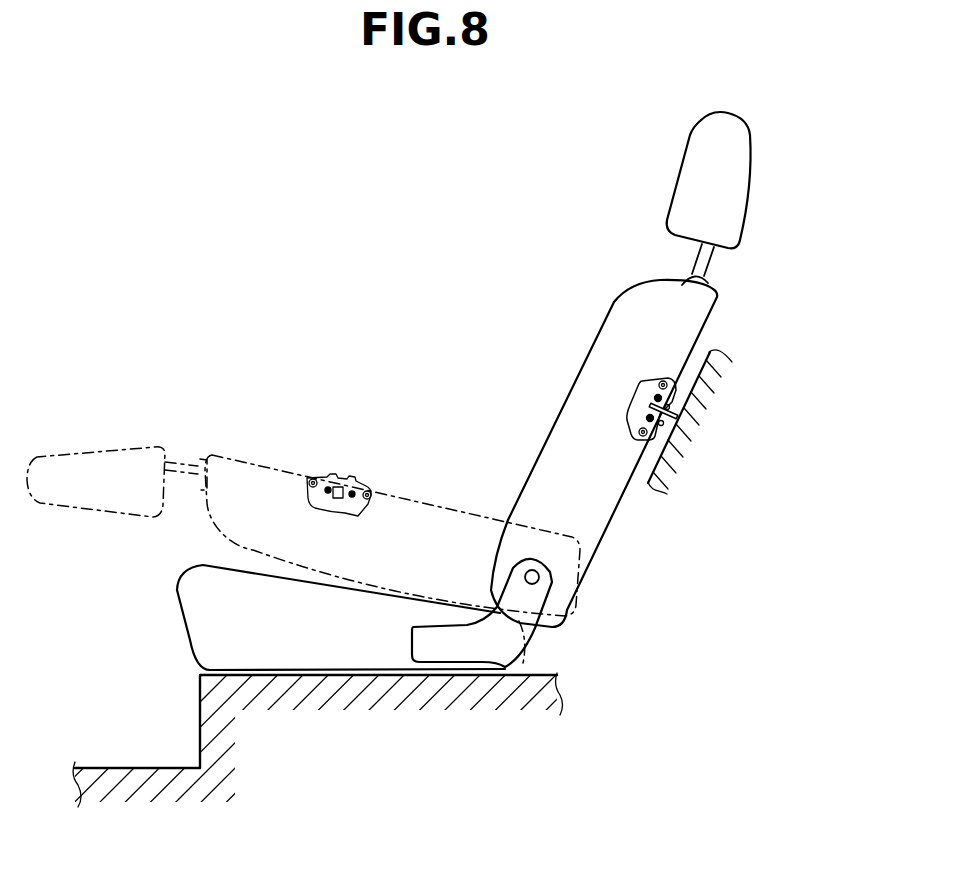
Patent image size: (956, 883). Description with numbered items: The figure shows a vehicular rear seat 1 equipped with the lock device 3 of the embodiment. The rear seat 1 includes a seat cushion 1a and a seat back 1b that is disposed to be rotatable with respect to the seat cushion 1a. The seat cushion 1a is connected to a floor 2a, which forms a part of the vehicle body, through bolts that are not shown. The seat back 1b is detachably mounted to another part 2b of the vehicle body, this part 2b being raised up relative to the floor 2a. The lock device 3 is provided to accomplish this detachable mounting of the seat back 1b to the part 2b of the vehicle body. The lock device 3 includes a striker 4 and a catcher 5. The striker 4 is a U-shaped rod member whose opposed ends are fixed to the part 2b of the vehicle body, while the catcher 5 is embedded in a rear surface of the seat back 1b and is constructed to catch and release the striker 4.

The rear seat 1 is at (503, 372).
The seat cushion 1a is at (383, 600).
The seat back 1b is at (550, 447).
The floor 2a is at (543, 672).
The part of the vehicle body 2b is at (700, 389).
The lock device 3 is at (807, 465).
The striker 4 is at (678, 415).
The catcher 5 is at (676, 430).